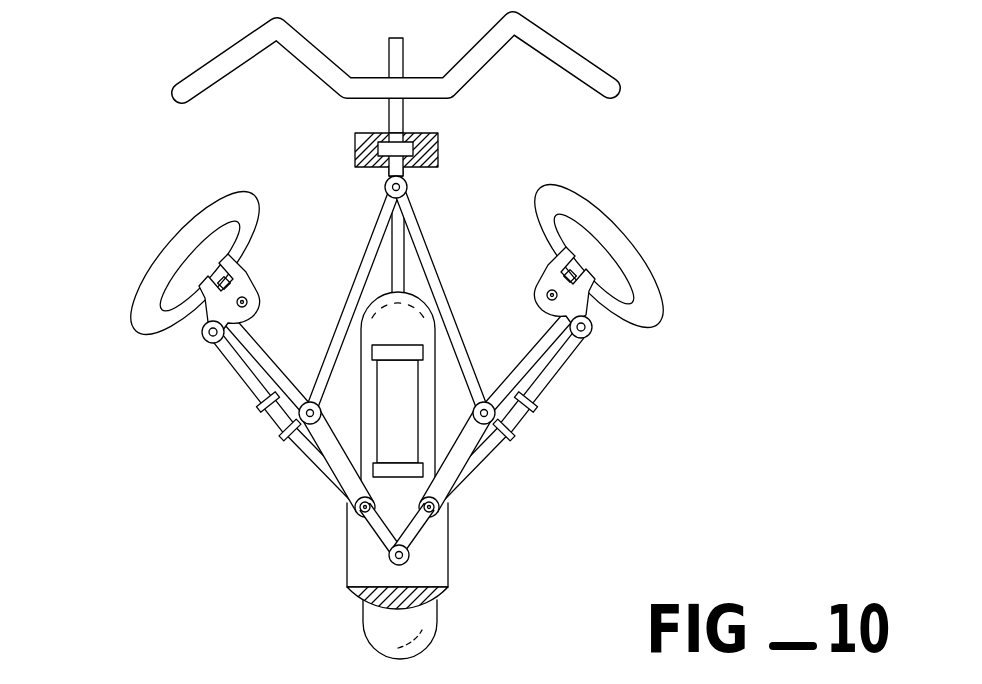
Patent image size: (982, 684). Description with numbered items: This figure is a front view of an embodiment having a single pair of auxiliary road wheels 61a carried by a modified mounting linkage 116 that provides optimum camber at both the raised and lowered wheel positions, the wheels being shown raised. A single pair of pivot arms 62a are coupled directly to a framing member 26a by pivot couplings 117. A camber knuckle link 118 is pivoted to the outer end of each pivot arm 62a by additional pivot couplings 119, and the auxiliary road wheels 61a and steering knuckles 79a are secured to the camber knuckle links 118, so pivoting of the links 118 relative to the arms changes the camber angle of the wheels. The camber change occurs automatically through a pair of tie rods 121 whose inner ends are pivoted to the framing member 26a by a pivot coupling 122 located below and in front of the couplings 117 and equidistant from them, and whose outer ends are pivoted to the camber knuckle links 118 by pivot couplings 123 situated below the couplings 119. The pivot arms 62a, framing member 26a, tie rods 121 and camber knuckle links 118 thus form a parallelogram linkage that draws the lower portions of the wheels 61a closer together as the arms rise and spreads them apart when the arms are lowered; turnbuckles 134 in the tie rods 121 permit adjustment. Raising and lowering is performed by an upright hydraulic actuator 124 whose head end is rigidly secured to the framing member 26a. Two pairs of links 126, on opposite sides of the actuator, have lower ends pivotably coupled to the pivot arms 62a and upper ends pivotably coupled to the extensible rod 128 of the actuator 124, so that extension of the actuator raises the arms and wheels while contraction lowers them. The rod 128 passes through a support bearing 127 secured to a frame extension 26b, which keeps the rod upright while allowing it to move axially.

The extensible rod 128 is at (389, 38).
The support bearing 127 is at (430, 133).
The frame extension 26b is at (438, 150).
The auxiliary road wheels 61a is at (190, 217).
The steering knuckles 79a is at (243, 268).
The pivot couplings 119 is at (249, 294).
The camber knuckle links 118 is at (257, 296).
The pivot couplings 123 is at (206, 341).
The turnbuckles 134 is at (272, 421).
The tie rods 121 is at (300, 443).
The pivot arms 62a is at (345, 472).
The links 126 is at (424, 242).
The hydraulic actuator 124 is at (392, 425).
The pivot couplings 117 is at (345, 503).
The pivot coupling 122 is at (388, 567).
The framing member 26a is at (446, 593).
The linkage 116 is at (518, 452).